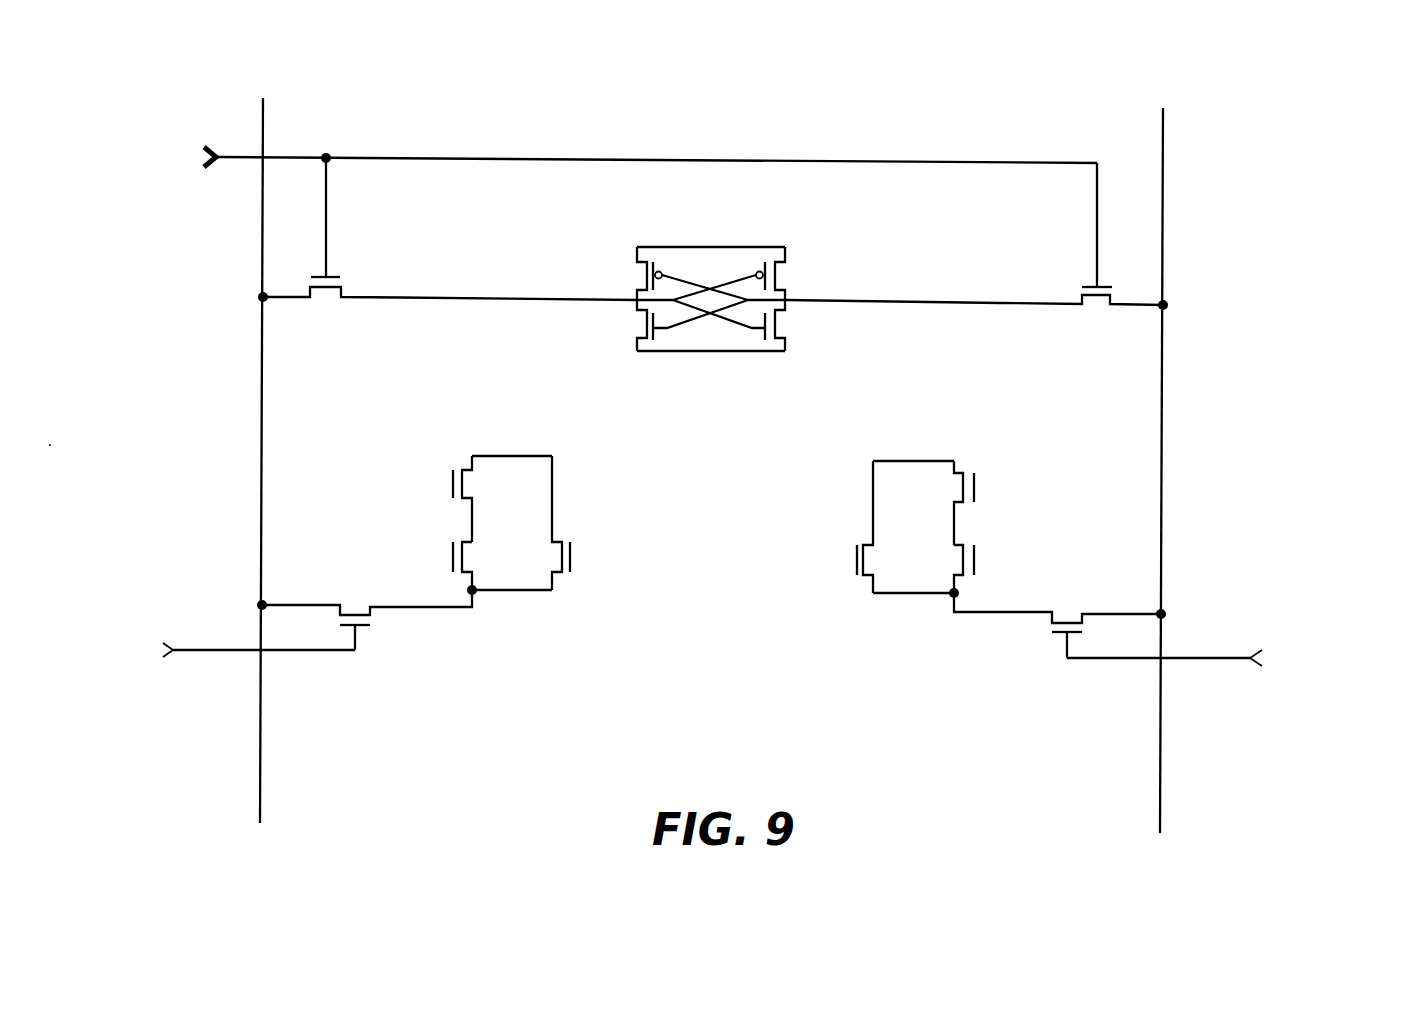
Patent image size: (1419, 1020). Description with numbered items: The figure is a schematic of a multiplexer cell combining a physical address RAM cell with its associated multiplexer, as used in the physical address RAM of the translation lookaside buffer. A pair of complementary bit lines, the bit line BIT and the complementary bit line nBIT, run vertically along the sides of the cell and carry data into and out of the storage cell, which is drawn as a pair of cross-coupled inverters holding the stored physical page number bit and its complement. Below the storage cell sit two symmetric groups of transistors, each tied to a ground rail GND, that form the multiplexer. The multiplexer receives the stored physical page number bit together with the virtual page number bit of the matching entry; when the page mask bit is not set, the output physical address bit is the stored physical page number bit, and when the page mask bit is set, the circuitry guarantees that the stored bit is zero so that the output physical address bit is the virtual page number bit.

The complementary bit line nBIT is at (260, 445).
The bit line BIT is at (1163, 455).
The ground supply rail GND is at (713, 510).